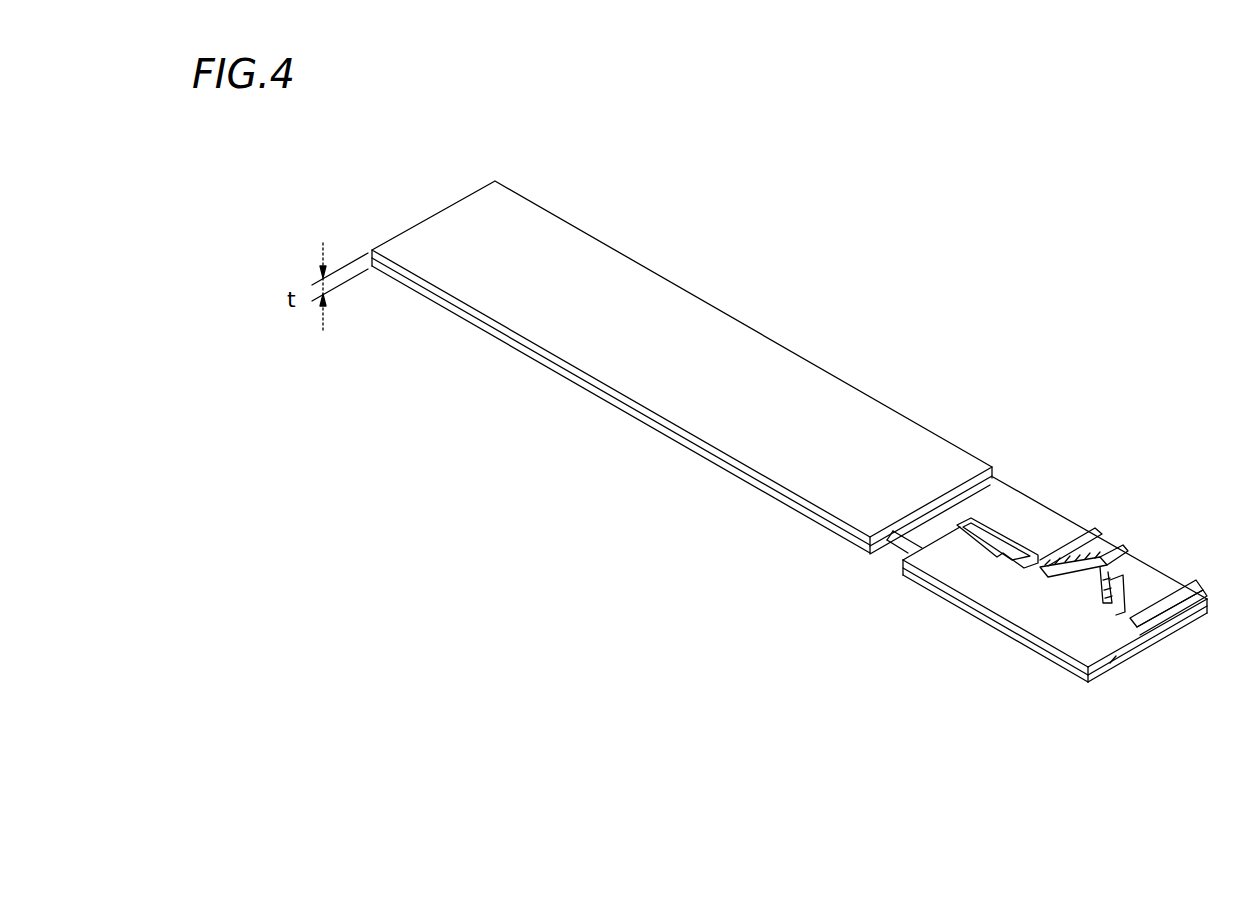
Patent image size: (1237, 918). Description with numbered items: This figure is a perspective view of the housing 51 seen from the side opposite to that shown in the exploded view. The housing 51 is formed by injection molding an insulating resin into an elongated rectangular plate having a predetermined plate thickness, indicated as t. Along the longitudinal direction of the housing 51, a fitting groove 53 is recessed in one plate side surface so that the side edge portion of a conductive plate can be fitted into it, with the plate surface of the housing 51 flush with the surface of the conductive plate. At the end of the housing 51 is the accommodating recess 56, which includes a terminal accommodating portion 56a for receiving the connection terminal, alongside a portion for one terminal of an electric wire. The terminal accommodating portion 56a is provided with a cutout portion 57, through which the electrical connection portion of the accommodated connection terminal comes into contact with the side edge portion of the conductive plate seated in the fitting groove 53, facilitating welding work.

The housing 51 is at (688, 282).
The fitting groove 53 is at (735, 477).
The accommodating recess 56 is at (1155, 453).
The terminal accommodating portion 56a is at (943, 515).
The cutout portion 57 is at (893, 546).